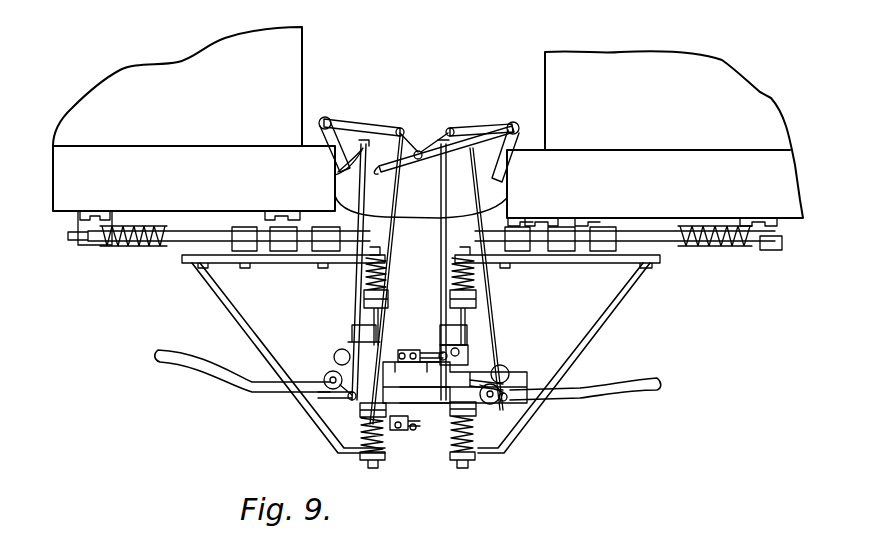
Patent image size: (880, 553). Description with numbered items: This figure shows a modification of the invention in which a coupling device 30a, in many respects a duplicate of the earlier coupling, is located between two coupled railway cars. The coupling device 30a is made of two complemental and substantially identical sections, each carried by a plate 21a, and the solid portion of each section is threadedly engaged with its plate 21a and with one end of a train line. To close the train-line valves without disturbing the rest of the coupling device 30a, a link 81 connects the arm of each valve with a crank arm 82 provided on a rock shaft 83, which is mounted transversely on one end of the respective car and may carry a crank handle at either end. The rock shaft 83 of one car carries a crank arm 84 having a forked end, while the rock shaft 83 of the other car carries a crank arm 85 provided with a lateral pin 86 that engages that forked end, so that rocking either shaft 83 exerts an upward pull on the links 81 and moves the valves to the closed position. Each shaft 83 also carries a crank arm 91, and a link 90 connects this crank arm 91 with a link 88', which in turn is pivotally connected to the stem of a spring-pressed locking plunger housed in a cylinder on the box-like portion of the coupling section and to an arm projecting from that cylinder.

The rock shaft 83 is at (319, 127).
The crank arm 91 is at (374, 126).
The crank arm 84 is at (438, 132).
The crank arm 85 is at (340, 181).
The lateral pin 86 is at (419, 160).
The crank arm 82 is at (497, 178).
The link 90 is at (441, 276).
The link 81 is at (352, 298).
The plate 21a is at (524, 343).
The link 88' is at (420, 348).
The coupling device 30a is at (428, 400).